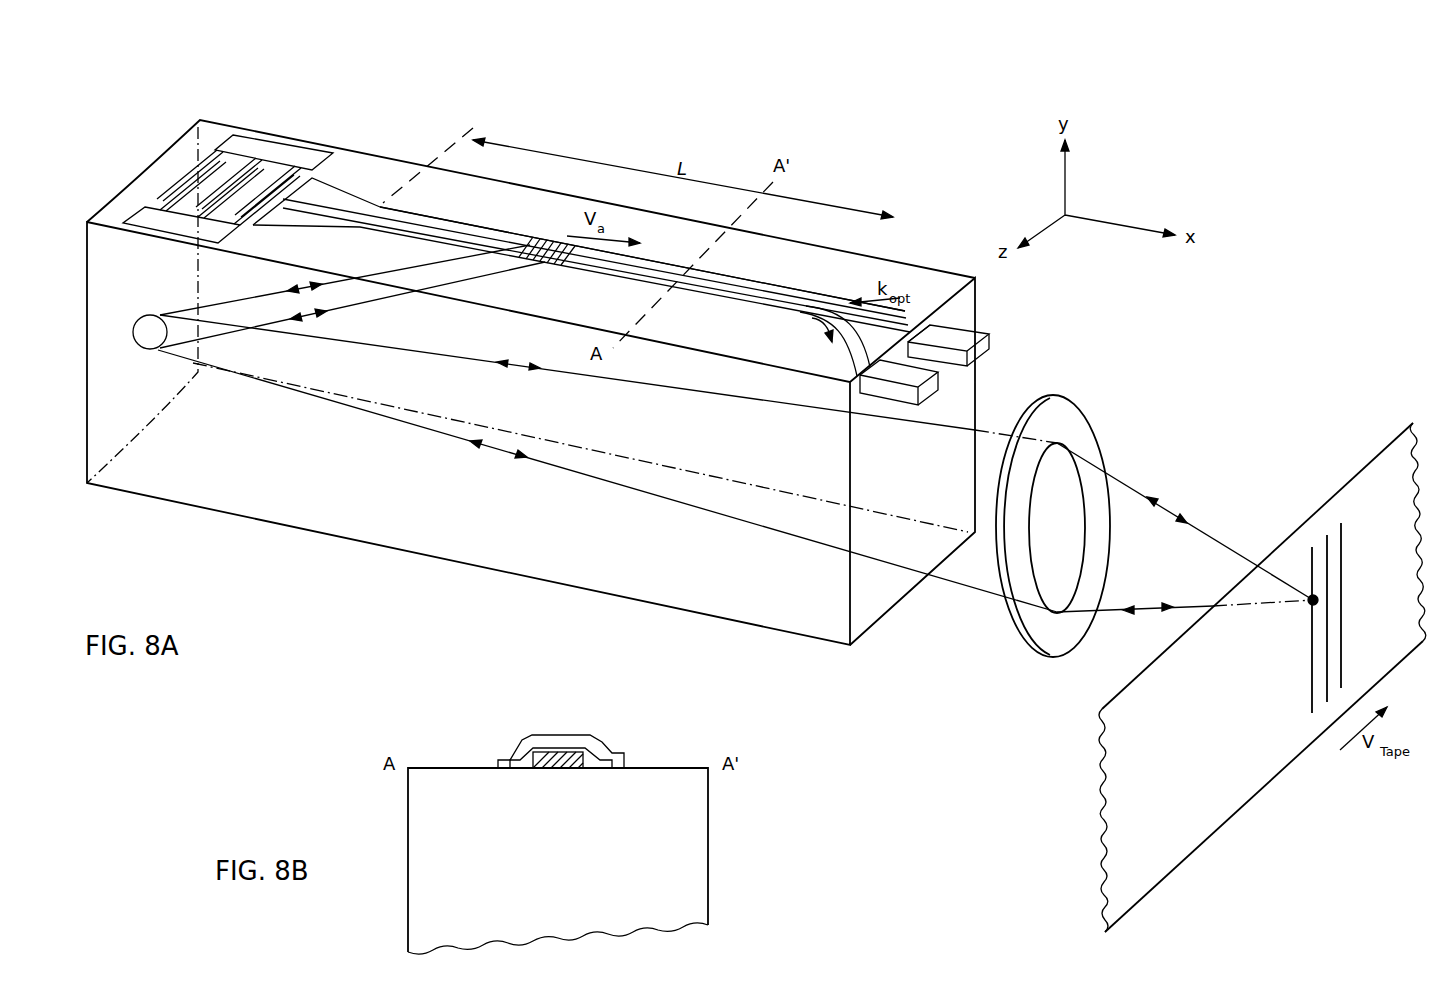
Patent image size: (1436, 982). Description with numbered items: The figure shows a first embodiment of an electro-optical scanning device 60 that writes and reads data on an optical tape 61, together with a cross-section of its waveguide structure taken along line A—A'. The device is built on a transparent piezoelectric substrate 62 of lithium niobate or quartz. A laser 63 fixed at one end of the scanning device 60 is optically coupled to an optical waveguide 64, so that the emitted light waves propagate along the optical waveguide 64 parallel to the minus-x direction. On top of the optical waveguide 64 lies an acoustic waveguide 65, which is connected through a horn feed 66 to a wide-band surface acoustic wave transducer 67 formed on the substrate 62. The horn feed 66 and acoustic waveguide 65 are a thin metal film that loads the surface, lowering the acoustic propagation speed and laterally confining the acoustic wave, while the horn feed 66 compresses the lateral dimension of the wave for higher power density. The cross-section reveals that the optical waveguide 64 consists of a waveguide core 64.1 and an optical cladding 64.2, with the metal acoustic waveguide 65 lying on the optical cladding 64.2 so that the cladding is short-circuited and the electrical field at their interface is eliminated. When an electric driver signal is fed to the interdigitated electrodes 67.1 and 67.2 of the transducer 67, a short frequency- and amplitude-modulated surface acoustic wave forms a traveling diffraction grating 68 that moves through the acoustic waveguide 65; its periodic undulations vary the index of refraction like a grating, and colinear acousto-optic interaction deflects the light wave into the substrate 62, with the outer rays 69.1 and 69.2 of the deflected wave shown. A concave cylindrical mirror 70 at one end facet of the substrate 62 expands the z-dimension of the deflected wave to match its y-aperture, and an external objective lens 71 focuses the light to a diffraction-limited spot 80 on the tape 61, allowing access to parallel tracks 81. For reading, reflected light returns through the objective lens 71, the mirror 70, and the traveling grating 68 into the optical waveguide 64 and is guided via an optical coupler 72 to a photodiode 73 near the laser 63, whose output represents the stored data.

In FIG. 8A, the electro-optical scanning device 60 is at (125, 533).
In FIG. 8A, the optical tape 61 is at (1210, 798).
In FIG. 8A, the substrate 62 is at (142, 305).
In FIG. 8B, the substrate 62 is at (558, 861).
In FIG. 8A, the laser 63 is at (970, 333).
In FIG. 8A, the optical waveguide 64 is at (910, 322).
In FIG. 8B, the waveguide core 64.1 is at (558, 752).
In FIG. 8B, the optical cladding 64.2 is at (615, 755).
In FIG. 8A, the acoustic waveguide 65 is at (790, 292).
In FIG. 8B, the acoustic waveguide 65 is at (530, 740).
In FIG. 8A, the horn feed 66 is at (332, 197).
In FIG. 8A, the surface acoustic wave wide-band transducer 67 is at (190, 187).
In FIG. 8A, the interdigitated electrode 67.1 is at (147, 220).
In FIG. 8A, the interdigitated electrode 67.2 is at (265, 148).
In FIG. 8A, the traveling diffraction grating 68 is at (547, 247).
In FIG. 8A, the outer ray 69.1 is at (370, 307).
In FIG. 8A, the outer ray 69.2 is at (237, 300).
In FIG. 8A, the concave cylindrical mirror 70 is at (110, 393).
In FIG. 8A, the objective lens 71 is at (1040, 628).
In FIG. 8A, the optical coupler 72 is at (853, 347).
In FIG. 8A, the photodiode 73 is at (917, 376).
In FIG. 8A, the diffraction limited spot 80 is at (1307, 608).
In FIG. 8A, the parallel tracks 81 is at (1342, 543).